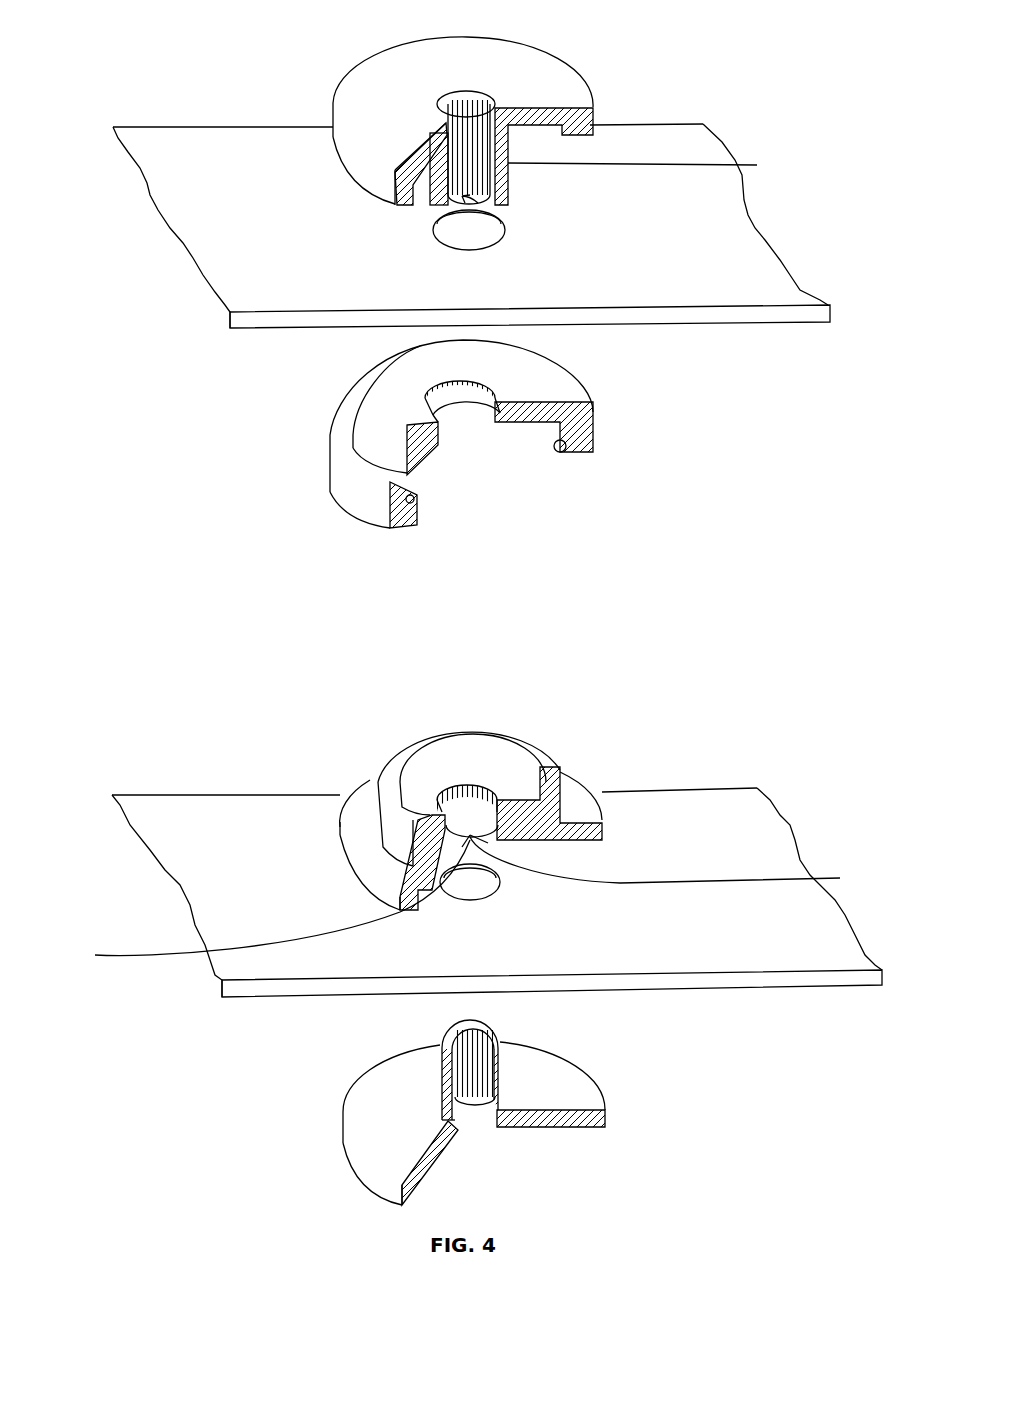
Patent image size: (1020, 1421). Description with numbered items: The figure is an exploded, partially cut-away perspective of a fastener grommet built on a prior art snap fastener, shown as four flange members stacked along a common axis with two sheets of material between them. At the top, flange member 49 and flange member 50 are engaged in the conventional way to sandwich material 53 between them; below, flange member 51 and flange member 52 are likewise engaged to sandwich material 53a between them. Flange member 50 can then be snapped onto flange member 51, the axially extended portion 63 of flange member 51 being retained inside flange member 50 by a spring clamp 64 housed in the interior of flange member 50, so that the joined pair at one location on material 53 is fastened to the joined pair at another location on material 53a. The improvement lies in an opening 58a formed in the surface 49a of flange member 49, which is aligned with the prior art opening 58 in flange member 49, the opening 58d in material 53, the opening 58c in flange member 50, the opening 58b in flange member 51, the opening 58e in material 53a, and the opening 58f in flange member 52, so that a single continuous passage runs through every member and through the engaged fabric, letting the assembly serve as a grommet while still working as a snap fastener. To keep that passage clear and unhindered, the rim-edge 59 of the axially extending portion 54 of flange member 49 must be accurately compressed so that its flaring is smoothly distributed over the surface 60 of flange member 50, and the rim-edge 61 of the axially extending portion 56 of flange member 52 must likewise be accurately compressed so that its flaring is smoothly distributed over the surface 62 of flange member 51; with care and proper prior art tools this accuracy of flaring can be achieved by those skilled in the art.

The flange member 49 is at (620, 78).
The surface 49a is at (503, 72).
The flange member 50 is at (636, 420).
The flange member 51 is at (645, 760).
The flange member 52 is at (641, 1100).
The material 53 is at (265, 288).
The material 53a is at (702, 819).
The axially extending portion 54 is at (651, 165).
The axially extending portion 56 is at (445, 1098).
The opening 58 is at (610, 140).
The opening 58a is at (452, 95).
The opening 58b is at (660, 842).
The opening 58c is at (470, 432).
The opening 58d is at (468, 232).
The opening 58e is at (261, 902).
The opening 58f is at (483, 1125).
The rim-edge 59 is at (440, 210).
The surface 60 is at (502, 420).
The rim-edge 61 is at (445, 1045).
The surface 62 is at (517, 793).
The axially extended portion 63 is at (407, 840).
The spring clamp 64 is at (553, 445).